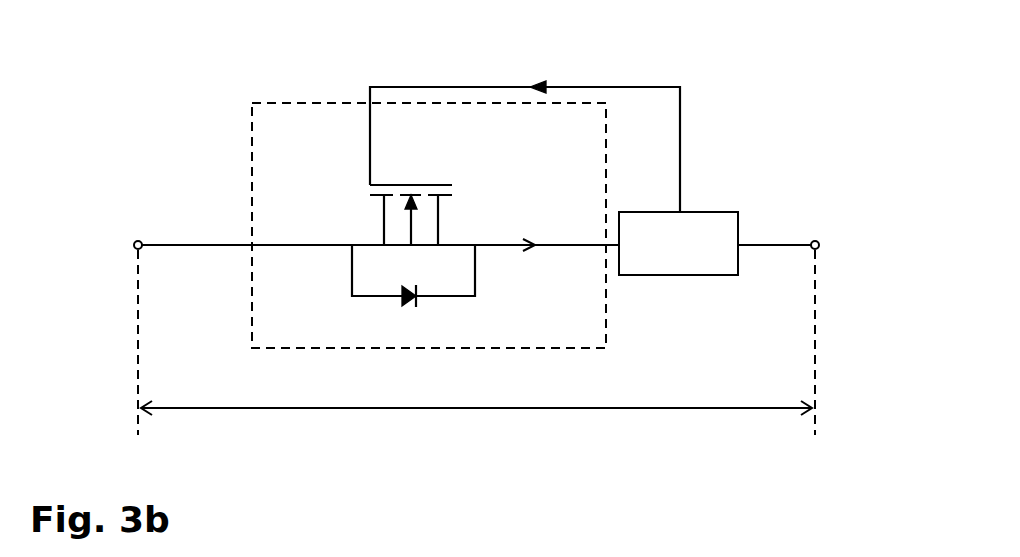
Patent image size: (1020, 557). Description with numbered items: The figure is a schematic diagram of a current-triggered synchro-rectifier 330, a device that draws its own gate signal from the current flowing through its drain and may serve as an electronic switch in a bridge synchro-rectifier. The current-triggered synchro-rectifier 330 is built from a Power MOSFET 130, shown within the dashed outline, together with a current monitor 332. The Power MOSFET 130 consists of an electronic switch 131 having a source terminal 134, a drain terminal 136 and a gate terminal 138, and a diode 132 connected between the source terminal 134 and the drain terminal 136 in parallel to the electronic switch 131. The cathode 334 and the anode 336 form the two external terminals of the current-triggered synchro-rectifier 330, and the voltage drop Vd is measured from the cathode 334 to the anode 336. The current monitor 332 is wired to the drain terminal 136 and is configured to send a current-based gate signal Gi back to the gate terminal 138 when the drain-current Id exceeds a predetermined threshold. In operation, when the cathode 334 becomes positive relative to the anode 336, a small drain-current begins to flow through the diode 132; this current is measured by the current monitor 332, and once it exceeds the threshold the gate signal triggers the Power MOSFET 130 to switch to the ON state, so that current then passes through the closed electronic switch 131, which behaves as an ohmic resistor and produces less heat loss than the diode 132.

The Power MOSFET 130 is at (253, 176).
The electronic switch 131 is at (488, 204).
The diode 132 is at (405, 305).
The source terminal 134 is at (306, 243).
The drain terminal 136 is at (566, 243).
The gate terminal 138 is at (368, 110).
The current-triggered synchro-rectifier 330 is at (712, 44).
The current monitor 332 is at (682, 268).
The cathode terminal 334 is at (136, 238).
The anode terminal 336 is at (818, 238).